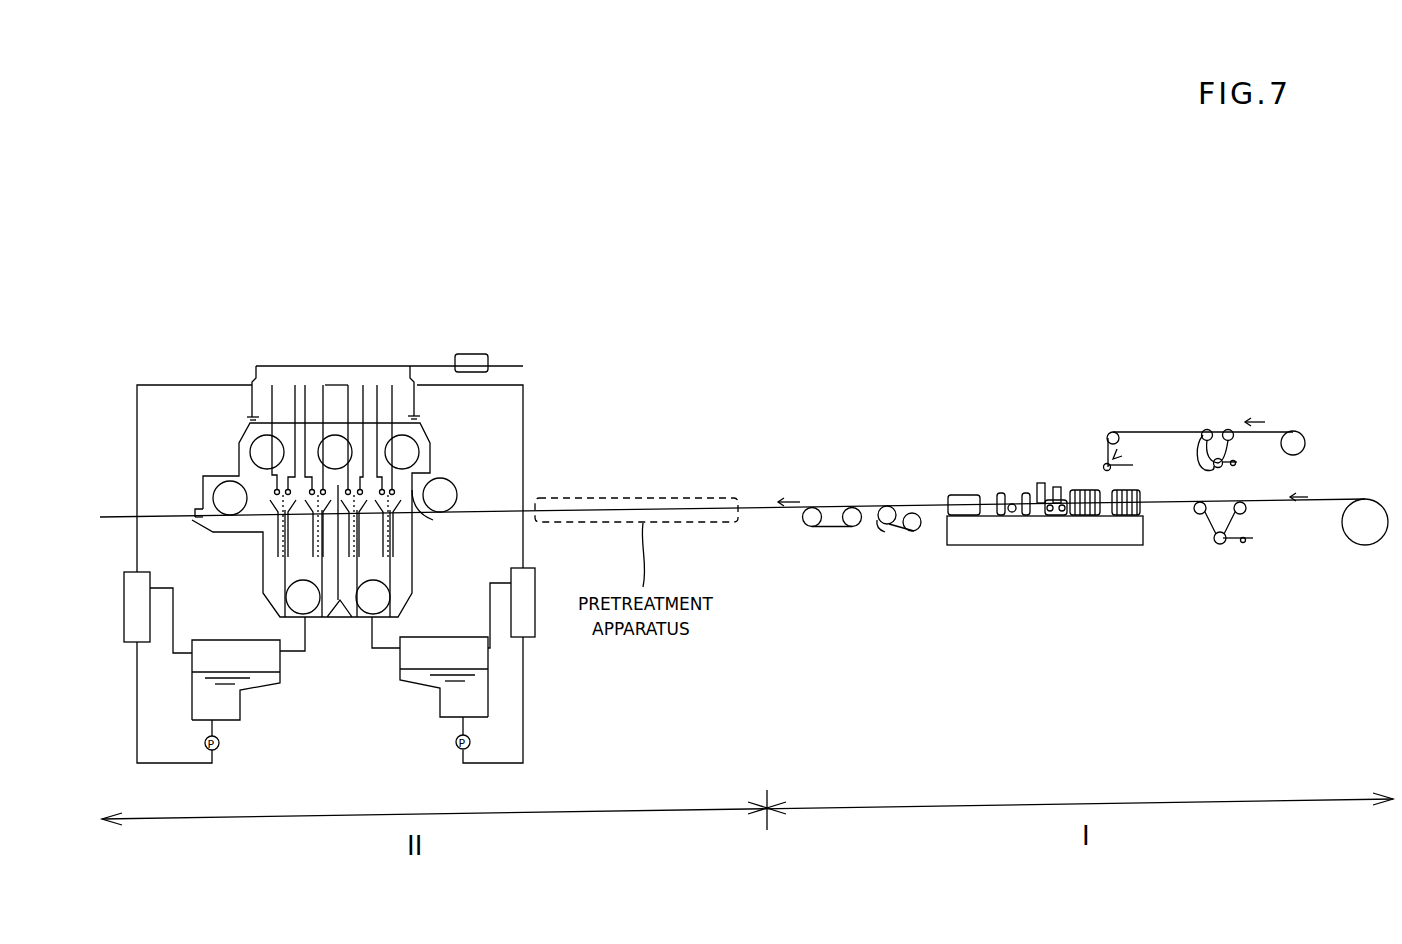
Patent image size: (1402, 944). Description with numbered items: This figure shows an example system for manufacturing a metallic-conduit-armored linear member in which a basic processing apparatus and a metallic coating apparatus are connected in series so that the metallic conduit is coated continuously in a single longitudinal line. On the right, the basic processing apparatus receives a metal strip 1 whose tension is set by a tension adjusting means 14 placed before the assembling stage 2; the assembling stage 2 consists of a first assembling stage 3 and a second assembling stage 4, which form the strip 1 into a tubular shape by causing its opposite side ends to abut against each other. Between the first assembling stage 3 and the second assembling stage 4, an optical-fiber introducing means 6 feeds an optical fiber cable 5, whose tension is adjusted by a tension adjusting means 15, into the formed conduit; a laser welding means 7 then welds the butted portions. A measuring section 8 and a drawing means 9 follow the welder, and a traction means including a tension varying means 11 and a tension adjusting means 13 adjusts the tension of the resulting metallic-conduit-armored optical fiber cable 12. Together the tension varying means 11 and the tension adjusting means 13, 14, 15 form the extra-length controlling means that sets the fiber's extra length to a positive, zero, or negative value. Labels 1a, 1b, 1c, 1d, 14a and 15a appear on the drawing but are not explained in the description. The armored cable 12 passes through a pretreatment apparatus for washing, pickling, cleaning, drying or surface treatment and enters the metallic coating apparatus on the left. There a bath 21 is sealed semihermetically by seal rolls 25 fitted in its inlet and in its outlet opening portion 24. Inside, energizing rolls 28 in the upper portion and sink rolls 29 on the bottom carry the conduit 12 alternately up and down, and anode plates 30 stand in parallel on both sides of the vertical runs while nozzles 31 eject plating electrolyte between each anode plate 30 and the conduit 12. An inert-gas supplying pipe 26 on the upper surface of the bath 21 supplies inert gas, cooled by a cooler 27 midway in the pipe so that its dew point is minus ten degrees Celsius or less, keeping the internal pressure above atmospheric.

The metal strip 1 is at (1323, 500).
The base plate 1a is at (1110, 518).
The fiber bundle portion 1b is at (1073, 493).
The fiber bundle portion 1c is at (990, 497).
The fiber bundle portion 1d is at (947, 508).
The assembling stage 2 is at (1140, 589).
The first assembling stage 3 is at (1140, 548).
The second assembling stage 4 is at (1098, 548).
The optical fiber cable 5 is at (1272, 431).
The optical-fiber introducing means 6 is at (1113, 459).
The laser welding means 7 is at (1062, 470).
The measuring section 8 is at (1030, 548).
The drawing means 9 is at (963, 493).
The tension varying means 11 is at (897, 532).
The metallic-conduit-armored optical fiber cable 12 is at (772, 508).
The tension adjusting means 13 is at (833, 528).
The tension adjusting means 14 is at (1222, 500).
The dancer roller shaft 14a is at (1223, 543).
The tension adjusting means 15 is at (1232, 428).
The tension roller 15a is at (1218, 428).
The bath 21 is at (239, 450).
The opening portion 24 is at (198, 516).
The seal rolls 25 is at (430, 463).
The inert-gas supplying pipe 26 is at (330, 365).
The cooler 27 is at (468, 353).
The energizing rolls 28 is at (410, 445).
The sink rolls 29 is at (357, 622).
The anode plates 30 is at (398, 540).
The nozzles 31 is at (277, 495).